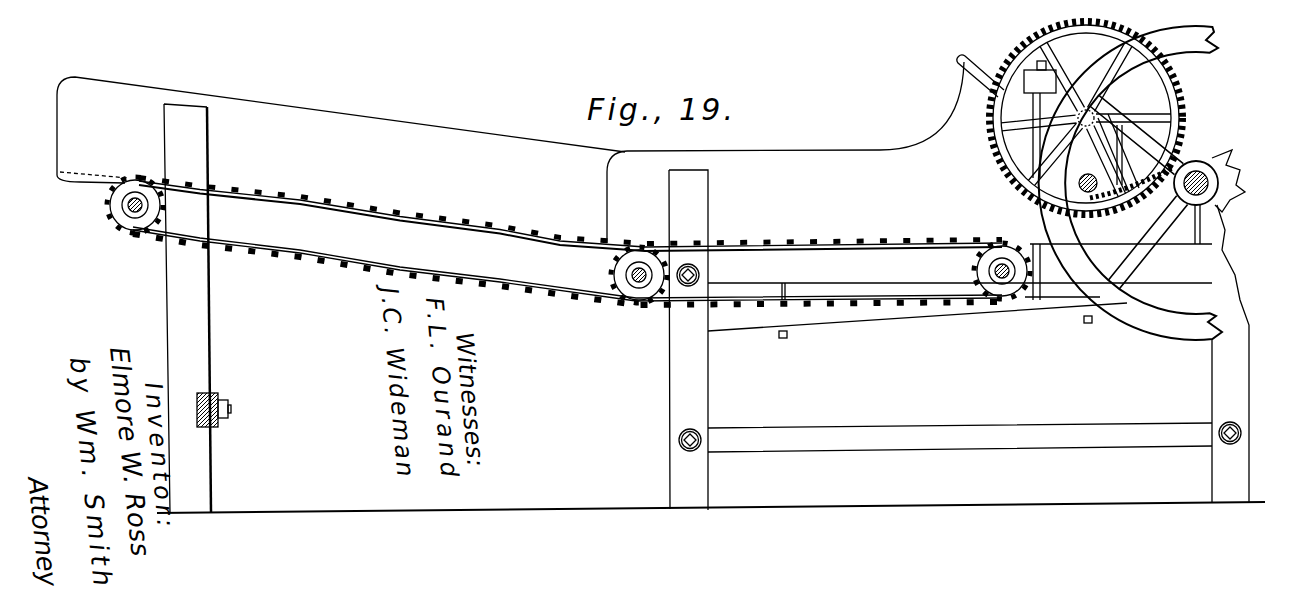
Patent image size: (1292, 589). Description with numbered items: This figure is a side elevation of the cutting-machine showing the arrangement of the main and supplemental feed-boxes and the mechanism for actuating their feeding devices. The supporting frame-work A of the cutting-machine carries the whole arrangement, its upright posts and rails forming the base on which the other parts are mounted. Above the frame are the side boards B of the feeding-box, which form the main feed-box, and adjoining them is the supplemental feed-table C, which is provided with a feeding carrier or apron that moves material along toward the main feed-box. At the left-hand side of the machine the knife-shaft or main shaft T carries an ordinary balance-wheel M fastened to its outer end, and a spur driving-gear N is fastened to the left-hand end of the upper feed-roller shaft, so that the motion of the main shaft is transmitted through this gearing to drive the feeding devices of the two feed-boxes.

The supporting frame-work A is at (711, 308).
The side boards of the feeding-box B is at (805, 149).
The supplemental feed-table C is at (341, 130).
The balance-wheel M is at (1142, 183).
The spur driving-gear N is at (1024, 48).
The knife-shaft or main shaft T is at (1212, 183).